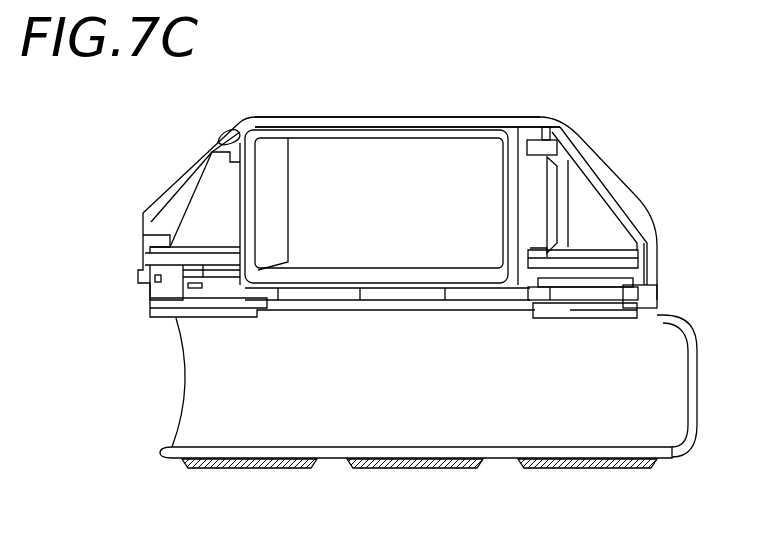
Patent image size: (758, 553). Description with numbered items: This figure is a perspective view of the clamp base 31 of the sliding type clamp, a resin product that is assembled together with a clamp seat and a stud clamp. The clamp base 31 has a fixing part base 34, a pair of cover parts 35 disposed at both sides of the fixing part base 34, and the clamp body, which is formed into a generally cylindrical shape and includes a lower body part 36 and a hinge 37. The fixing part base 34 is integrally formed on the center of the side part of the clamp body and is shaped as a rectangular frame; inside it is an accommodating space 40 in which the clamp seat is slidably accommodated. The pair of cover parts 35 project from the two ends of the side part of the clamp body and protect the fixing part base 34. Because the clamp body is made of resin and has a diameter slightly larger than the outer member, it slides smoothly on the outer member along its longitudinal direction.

The clamp base 31 is at (660, 169).
The fixing part base 34 is at (460, 116).
The cover parts 35 is at (183, 168).
The lower body part 36 is at (195, 363).
The hinge 37 is at (273, 469).
The accommodating space 40 is at (373, 167).